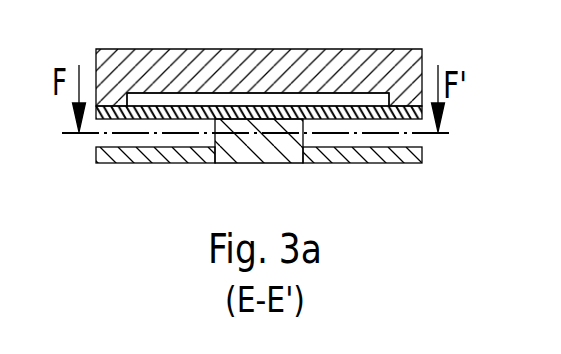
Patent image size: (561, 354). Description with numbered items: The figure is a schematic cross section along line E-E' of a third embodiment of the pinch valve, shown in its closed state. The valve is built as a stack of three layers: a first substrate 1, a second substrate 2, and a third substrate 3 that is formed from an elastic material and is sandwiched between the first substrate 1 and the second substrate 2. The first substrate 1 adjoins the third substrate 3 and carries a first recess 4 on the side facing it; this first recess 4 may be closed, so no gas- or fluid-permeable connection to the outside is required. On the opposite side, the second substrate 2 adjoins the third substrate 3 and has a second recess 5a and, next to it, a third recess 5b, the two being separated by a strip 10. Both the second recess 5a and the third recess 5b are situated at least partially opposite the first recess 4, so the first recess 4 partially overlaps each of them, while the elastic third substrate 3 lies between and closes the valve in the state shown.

The first substrate 1 is at (258, 75).
The second substrate 2 is at (232, 140).
The third substrate 3 is at (182, 107).
The first recess 4 is at (328, 100).
The second recess 5a is at (148, 138).
The third recess 5b is at (360, 138).
The strip 10 is at (281, 139).